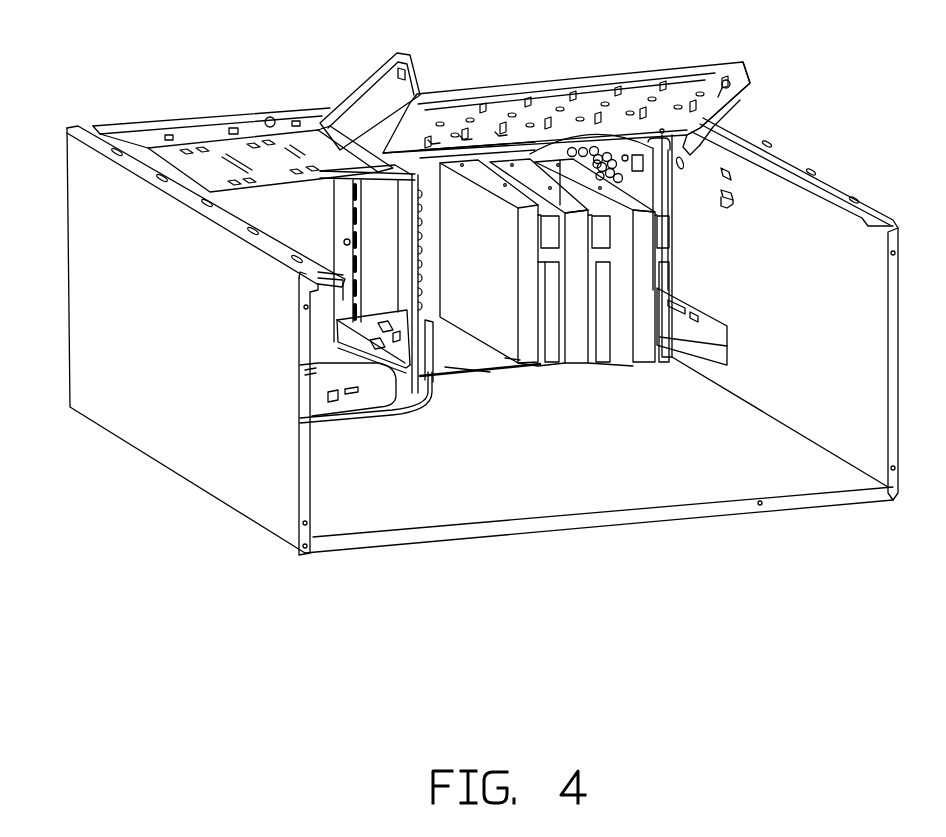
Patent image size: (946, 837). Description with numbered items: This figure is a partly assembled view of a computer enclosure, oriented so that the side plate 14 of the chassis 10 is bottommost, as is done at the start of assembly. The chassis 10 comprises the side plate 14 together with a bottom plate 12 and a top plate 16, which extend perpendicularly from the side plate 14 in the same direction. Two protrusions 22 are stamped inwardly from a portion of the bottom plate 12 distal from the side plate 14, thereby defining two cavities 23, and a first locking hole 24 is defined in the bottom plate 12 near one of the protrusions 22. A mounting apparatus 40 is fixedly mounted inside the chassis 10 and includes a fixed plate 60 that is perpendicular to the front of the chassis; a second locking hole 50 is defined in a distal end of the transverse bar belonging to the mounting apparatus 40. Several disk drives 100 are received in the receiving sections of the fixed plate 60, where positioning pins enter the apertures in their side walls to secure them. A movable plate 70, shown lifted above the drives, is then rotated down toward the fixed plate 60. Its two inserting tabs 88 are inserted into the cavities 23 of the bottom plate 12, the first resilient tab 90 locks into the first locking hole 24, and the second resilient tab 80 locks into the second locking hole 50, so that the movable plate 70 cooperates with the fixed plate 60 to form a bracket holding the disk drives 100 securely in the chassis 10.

The chassis 10 is at (482, 362).
The bottom plate 12 is at (848, 378).
The side plate 14 is at (622, 462).
The top plate 16 is at (207, 452).
The protrusions 22 is at (733, 200).
The cavities 23 is at (731, 192).
The first locking hole 24 is at (729, 171).
The mounting apparatus 40 is at (222, 150).
The second locking hole 50 is at (410, 180).
The fixed plate 60 is at (448, 355).
The movable plate 70 is at (517, 80).
The second resilient tab 80 is at (400, 60).
The inserting tabs 88 is at (740, 97).
The first resilient tab 90 is at (730, 80).
The disk drives 100 is at (527, 313).